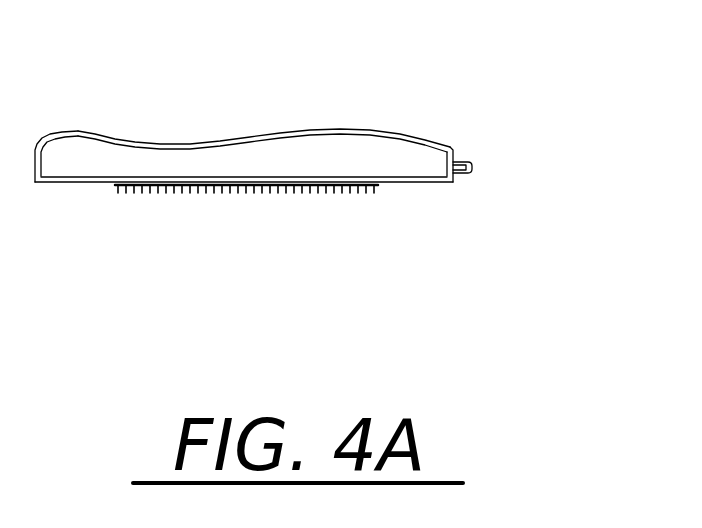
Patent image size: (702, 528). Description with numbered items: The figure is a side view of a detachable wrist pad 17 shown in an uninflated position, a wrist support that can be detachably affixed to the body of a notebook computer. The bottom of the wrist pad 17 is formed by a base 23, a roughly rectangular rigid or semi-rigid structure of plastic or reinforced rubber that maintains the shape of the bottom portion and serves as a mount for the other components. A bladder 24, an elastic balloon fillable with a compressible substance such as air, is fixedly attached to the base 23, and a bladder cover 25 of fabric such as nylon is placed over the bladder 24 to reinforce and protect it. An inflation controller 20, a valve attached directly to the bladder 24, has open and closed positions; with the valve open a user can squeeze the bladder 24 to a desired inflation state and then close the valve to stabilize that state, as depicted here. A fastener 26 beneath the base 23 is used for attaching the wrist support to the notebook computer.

The wrist pad 17 is at (335, 165).
The inflation controller 20 is at (472, 167).
The base 23 is at (447, 185).
The bladder 24 is at (420, 160).
The bladder cover 25 is at (223, 142).
The fastener 26 is at (262, 188).